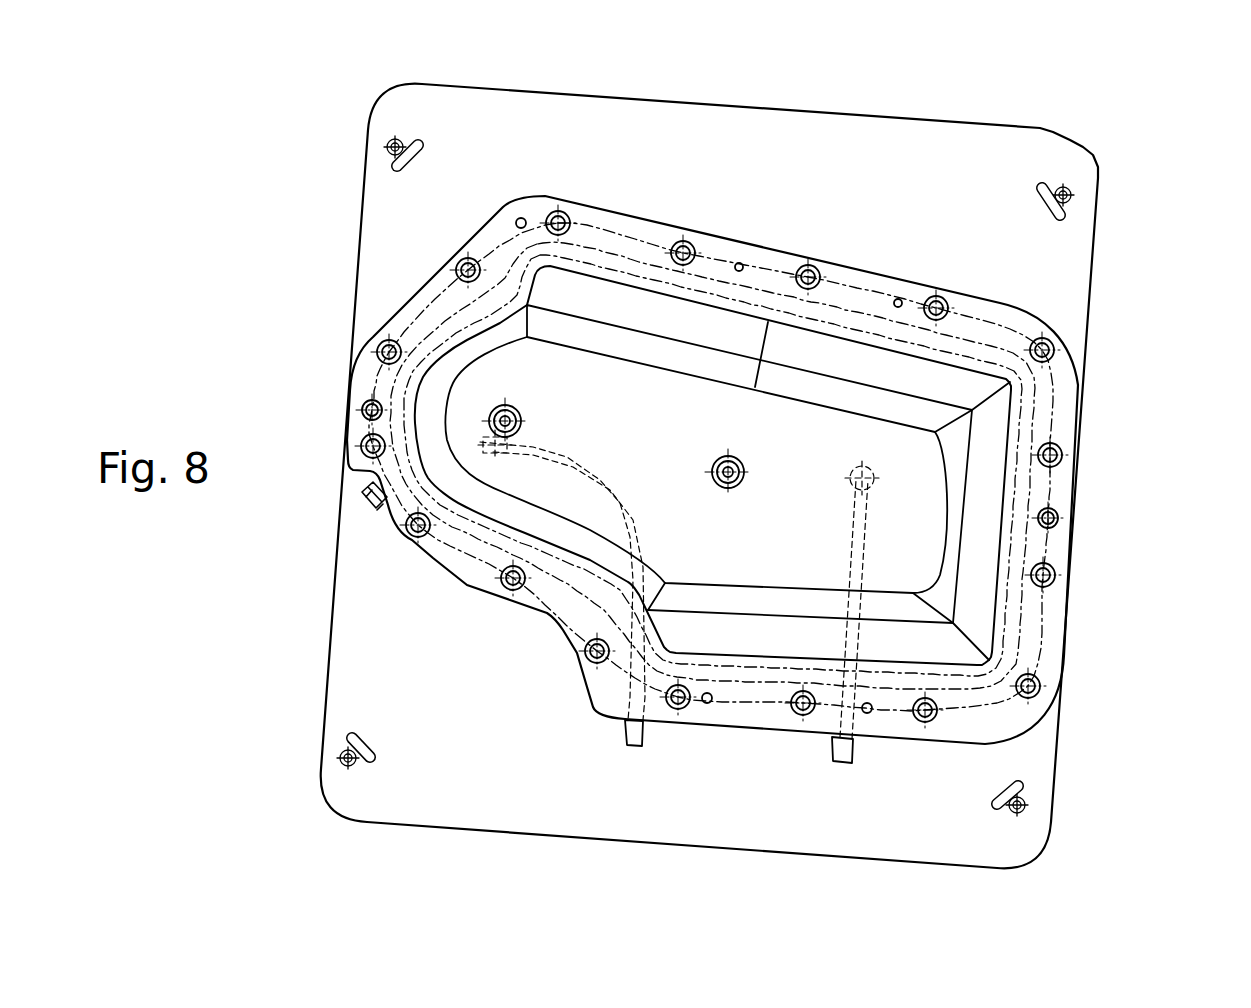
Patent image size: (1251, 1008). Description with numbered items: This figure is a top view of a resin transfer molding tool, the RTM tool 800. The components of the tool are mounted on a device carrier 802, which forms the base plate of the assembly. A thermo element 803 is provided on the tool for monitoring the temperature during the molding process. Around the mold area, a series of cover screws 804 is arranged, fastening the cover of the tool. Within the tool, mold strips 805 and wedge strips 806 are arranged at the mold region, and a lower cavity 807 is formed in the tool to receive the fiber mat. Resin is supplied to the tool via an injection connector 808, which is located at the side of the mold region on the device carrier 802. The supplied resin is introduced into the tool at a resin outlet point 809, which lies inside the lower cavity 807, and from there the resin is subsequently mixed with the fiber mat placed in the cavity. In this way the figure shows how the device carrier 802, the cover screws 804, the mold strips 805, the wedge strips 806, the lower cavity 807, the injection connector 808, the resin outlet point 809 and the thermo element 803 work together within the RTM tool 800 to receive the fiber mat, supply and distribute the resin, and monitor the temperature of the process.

The RTM tool 800 is at (413, 137).
The device carrier 802 is at (787, 133).
The thermo element 803 is at (632, 748).
The cover screws 804 is at (810, 262).
The mold strips 805 is at (717, 367).
The wedge strips 806 is at (597, 290).
The lower cavity 807 is at (522, 214).
The injection connector 808 is at (371, 509).
The resin outlet point 809 is at (715, 465).